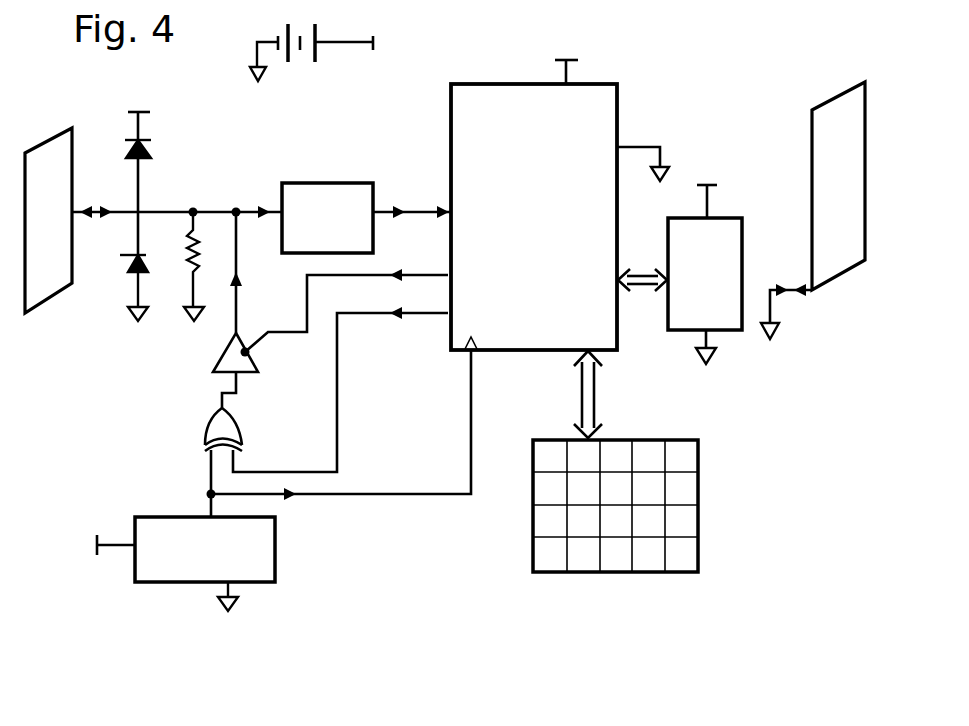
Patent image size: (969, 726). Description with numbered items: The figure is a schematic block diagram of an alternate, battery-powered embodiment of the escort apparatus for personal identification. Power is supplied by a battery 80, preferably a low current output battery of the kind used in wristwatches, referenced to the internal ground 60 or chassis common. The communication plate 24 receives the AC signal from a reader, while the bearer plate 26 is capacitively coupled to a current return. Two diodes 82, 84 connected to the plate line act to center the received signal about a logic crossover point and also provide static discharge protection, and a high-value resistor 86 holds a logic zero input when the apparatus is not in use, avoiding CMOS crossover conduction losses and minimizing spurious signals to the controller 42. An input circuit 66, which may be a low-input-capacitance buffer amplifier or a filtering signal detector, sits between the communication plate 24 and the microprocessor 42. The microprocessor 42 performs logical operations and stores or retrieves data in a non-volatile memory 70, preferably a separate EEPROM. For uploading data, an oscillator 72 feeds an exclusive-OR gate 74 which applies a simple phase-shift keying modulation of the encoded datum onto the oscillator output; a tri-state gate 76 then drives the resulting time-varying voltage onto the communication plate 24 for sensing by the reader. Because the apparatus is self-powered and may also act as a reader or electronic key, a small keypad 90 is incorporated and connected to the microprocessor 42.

The communication plate 24 is at (62, 160).
The bearer plate 26 is at (843, 150).
The microprocessor 42 is at (558, 333).
The internal ground 60 is at (192, 323).
The input circuit 66 is at (327, 200).
The non-volatile memory 70 is at (715, 242).
The oscillator 72 is at (193, 527).
The exclusive-OR gate 74 is at (205, 425).
The tri-state gate 76 is at (258, 362).
The battery 80 is at (298, 62).
The diode 82 is at (155, 148).
The diode 84 is at (128, 250).
The resistor 86 is at (180, 257).
The keypad 90 is at (618, 575).